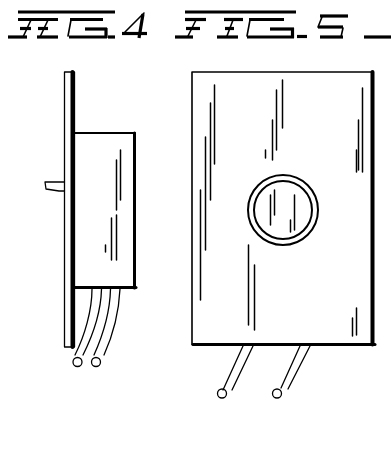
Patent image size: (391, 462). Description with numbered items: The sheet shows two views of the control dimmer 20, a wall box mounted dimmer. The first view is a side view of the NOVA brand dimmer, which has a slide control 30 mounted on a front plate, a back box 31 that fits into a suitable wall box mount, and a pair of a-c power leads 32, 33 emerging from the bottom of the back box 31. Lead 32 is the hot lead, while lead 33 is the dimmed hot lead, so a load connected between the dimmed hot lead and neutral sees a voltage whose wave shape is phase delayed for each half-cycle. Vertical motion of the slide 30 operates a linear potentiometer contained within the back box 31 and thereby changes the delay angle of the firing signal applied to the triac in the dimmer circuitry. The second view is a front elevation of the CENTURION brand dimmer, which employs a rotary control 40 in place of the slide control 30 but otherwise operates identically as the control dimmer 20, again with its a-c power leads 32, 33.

In FIG. 4, the control dimmer 20 is at (64, 137).
In FIG. 5, the control dimmer 20 is at (187, 133).
In FIG. 4, the slide control 30 is at (58, 192).
In FIG. 4, the back box 31 is at (137, 215).
In FIG. 4, the a-c power lead 32 is at (70, 359).
In FIG. 5, the a-c power lead 32 is at (232, 371).
In FIG. 4, the a-c power lead 33 is at (105, 353).
In FIG. 5, the a-c power lead 33 is at (307, 362).
In FIG. 5, the rotary control 40 is at (293, 247).